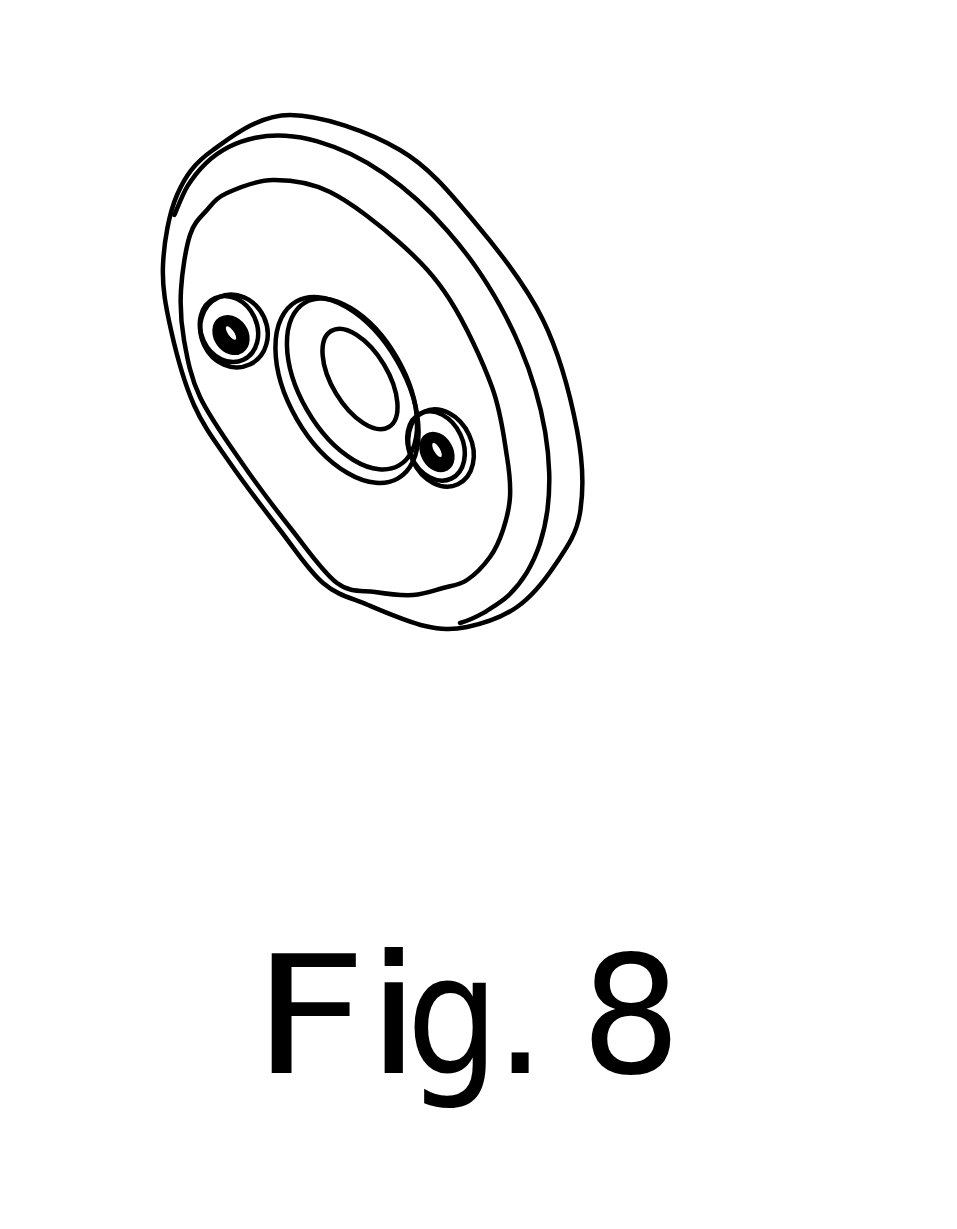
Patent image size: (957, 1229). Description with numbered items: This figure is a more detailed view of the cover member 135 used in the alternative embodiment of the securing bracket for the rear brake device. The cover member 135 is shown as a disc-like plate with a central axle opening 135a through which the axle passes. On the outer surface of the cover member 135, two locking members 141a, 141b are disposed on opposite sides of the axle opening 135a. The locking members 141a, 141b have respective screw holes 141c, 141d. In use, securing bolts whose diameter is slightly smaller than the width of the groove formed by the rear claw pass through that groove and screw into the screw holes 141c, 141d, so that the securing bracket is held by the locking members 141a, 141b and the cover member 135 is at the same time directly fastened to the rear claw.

The cover member 135 is at (483, 228).
The axle opening 135a is at (346, 410).
The locking member 141a is at (222, 297).
The locking member 141b is at (468, 428).
The screw hole 141c is at (232, 356).
The screw hole 141d is at (456, 490).